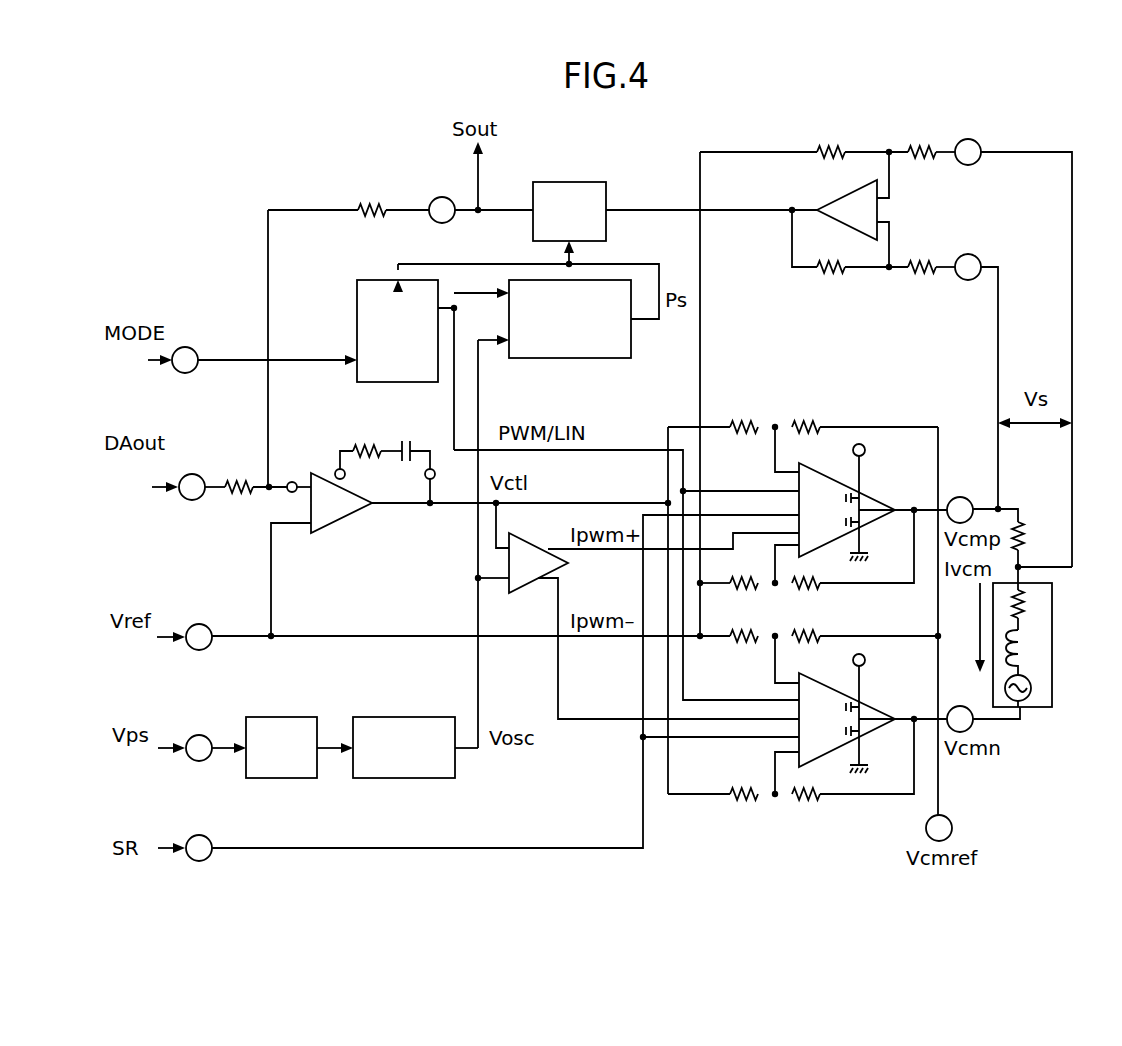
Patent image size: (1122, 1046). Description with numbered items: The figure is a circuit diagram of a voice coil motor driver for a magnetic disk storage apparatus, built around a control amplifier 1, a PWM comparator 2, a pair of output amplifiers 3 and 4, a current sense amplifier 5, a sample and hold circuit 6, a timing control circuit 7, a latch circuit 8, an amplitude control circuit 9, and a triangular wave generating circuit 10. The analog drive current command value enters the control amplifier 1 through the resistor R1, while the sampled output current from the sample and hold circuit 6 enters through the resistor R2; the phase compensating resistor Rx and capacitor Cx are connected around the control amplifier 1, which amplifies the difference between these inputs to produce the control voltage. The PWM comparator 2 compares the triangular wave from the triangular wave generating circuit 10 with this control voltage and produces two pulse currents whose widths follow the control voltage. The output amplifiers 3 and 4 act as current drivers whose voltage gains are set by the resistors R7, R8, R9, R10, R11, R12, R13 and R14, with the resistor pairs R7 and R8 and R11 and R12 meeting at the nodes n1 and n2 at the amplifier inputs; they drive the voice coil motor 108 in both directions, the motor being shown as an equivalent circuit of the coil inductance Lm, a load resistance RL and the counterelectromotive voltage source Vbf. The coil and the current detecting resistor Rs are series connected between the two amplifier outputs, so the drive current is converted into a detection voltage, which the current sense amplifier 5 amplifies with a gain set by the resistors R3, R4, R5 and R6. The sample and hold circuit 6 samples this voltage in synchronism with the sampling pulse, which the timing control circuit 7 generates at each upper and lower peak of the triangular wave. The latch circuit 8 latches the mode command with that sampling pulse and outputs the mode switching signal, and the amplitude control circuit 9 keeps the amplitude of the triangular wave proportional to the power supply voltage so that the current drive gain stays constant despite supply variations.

The control amplifier 1 is at (354, 515).
The PWM comparator 2 is at (518, 590).
The output amplifier 3 is at (831, 483).
The output amplifier 4 is at (828, 693).
The current sense amplifier 5 is at (840, 193).
The sample and hold circuit 6 is at (572, 182).
The timing control circuit 7 is at (610, 358).
The latch circuit 8 is at (357, 296).
The amplitude control circuit 9 is at (280, 717).
The triangular wave generating circuit 10 is at (400, 717).
The voice coil motor 108 is at (1051, 680).
The resistor R1 is at (246, 472).
The resistor R2 is at (348, 195).
The resistor R3 is at (922, 139).
The resistor R4 is at (831, 139).
The resistor R5 is at (922, 255).
The resistor R6 is at (831, 255).
The resistor R7 is at (742, 412).
The resistor R8 is at (806, 412).
The resistor R9 is at (743, 570).
The resistor R10 is at (819, 571).
The resistor R11 is at (741, 652).
The resistor R12 is at (830, 624).
The resistor R13 is at (739, 808).
The resistor R14 is at (805, 808).
The resistor Rx is at (368, 444).
The capacitor Cx is at (414, 456).
The current detecting resistor Rs is at (1034, 537).
The load resistance RL is at (1032, 600).
The inductance Lm is at (1034, 648).
The counterelectromotive voltage source Vbf is at (1032, 690).
The node n1 is at (773, 416).
The node n2 is at (777, 600).